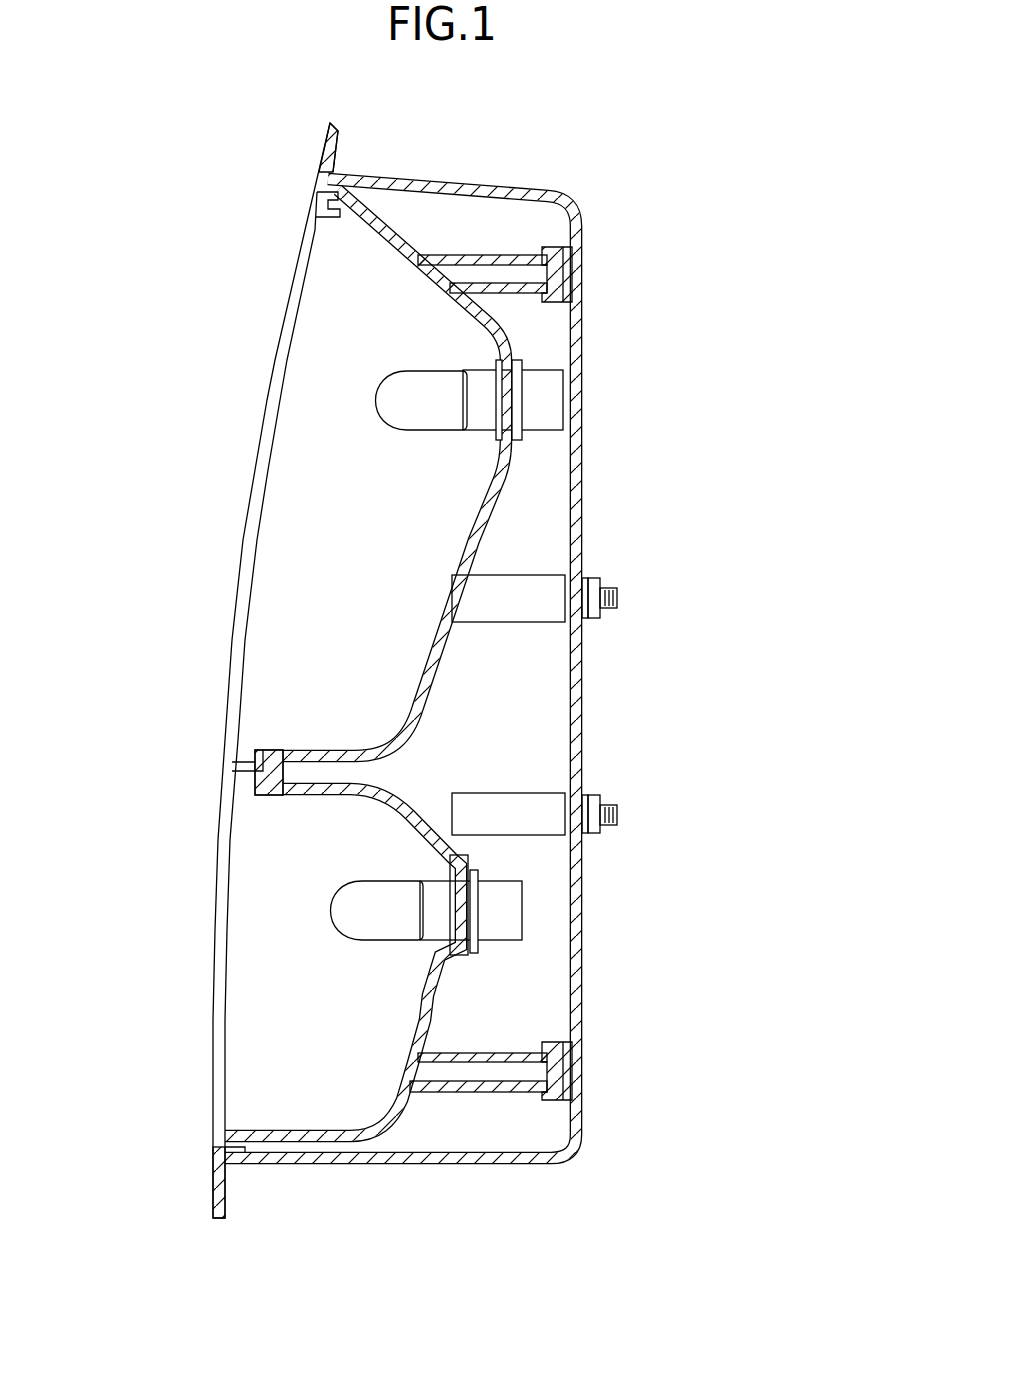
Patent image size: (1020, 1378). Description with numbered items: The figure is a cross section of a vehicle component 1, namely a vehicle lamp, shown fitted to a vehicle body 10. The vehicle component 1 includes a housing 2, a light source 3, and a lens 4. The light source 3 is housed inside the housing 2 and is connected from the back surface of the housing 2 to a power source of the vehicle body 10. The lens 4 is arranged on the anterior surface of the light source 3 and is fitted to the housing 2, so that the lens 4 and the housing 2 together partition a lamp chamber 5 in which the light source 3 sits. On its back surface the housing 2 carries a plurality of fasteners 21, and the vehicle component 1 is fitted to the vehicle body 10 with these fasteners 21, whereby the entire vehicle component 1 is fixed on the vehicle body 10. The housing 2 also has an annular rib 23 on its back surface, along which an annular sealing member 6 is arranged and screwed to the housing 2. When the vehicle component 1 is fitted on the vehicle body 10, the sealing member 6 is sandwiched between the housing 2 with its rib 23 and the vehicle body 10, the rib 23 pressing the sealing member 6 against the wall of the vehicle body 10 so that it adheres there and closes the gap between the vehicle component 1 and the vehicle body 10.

The vehicle component 1 is at (173, 141).
The housing 2 is at (490, 512).
The light source 3 is at (397, 402).
The lens 4 is at (252, 477).
The lamp chamber 5 is at (344, 580).
The sealing member 6 is at (555, 281).
The vehicle body 10 is at (582, 702).
The fastener 21 is at (598, 580).
The rib 23 is at (492, 255).